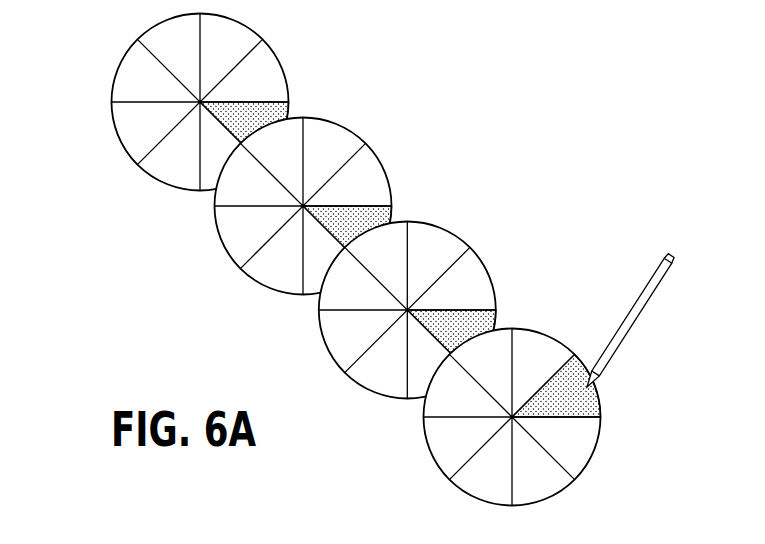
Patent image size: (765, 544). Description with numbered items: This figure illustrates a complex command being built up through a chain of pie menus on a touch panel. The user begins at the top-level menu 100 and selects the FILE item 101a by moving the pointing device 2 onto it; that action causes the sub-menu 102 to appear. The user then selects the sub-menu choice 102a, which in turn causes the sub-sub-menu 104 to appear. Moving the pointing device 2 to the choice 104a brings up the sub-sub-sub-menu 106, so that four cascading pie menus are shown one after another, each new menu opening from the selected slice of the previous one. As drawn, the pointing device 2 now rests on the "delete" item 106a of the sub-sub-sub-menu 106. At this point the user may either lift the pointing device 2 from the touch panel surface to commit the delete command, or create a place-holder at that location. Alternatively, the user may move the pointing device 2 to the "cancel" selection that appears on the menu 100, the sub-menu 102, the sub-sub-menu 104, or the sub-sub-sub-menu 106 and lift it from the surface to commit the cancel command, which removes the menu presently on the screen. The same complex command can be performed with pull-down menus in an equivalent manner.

The pointing device 2 is at (618, 328).
The menu 100 is at (128, 130).
The FILE item 101a is at (290, 115).
The sub-menu 102 is at (345, 133).
The sub-menu choice 102a is at (393, 222).
The sub-sub-menu 104 is at (442, 235).
The choice 104a is at (497, 326).
The sub-sub-sub-menu 106 is at (580, 447).
The delete item 106a is at (590, 400).